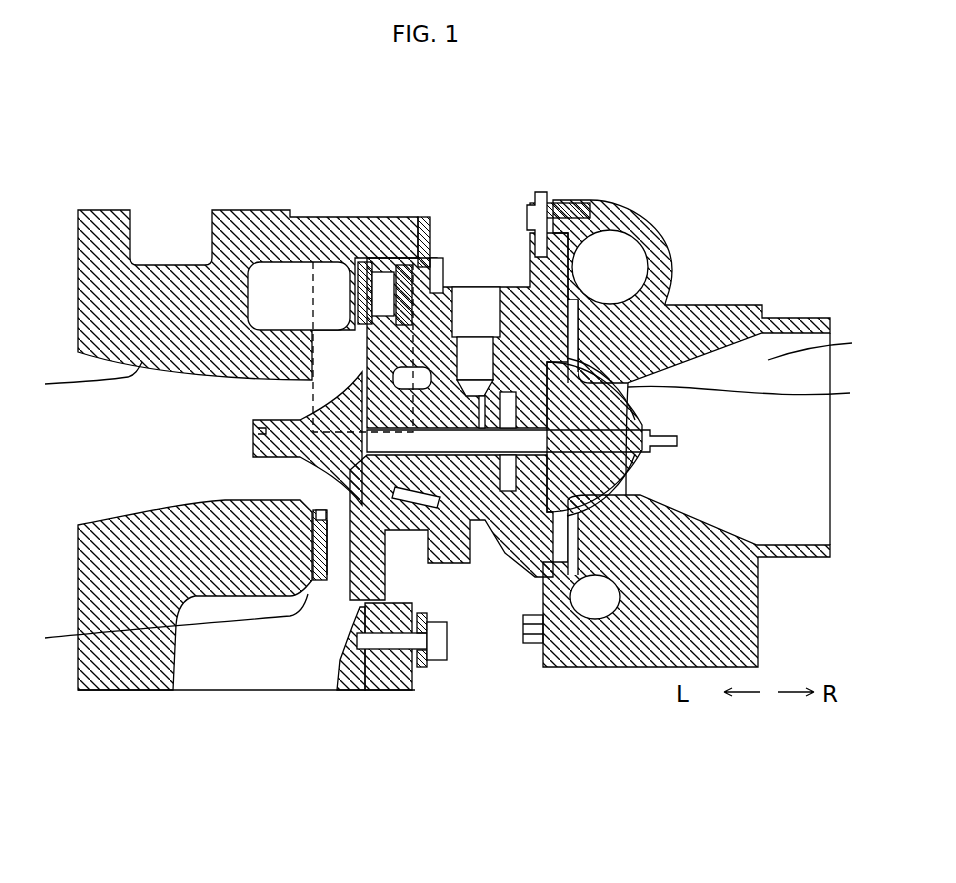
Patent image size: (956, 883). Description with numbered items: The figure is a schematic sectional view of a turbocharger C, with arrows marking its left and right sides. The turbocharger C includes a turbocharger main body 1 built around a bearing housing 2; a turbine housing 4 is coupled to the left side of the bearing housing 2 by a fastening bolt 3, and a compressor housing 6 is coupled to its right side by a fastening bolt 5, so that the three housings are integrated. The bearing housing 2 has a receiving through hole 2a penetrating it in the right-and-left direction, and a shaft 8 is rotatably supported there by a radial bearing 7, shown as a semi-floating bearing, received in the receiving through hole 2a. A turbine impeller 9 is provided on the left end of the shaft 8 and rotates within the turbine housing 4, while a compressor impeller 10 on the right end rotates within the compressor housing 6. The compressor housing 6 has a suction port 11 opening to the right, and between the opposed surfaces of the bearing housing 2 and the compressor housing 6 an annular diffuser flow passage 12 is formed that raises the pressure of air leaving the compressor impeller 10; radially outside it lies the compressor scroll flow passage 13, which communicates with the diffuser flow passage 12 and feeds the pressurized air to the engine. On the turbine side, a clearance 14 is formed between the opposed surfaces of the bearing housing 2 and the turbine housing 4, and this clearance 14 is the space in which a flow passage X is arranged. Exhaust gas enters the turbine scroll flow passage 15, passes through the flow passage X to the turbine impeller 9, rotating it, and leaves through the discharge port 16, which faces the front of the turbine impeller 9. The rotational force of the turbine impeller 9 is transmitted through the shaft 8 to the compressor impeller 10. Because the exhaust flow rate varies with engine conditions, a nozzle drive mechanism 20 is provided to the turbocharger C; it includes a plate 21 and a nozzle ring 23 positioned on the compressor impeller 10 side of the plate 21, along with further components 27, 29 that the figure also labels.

The turbocharger main body 1 is at (126, 164).
The turbocharger C is at (86, 132).
The bearing housing 2 is at (512, 287).
The receiving through hole 2a is at (438, 262).
The fastening bolt 3 is at (435, 662).
The turbine housing 4 is at (216, 210).
The fastening bolt 5 is at (536, 194).
The compressor housing 6 is at (782, 318).
The radial bearing 7 is at (440, 502).
The shaft 8 is at (482, 430).
The turbine impeller 9 is at (265, 487).
The compressor impeller 10 is at (754, 393).
The suction port 11 is at (824, 345).
The diffuser flow passage 12 is at (590, 330).
The compressor scroll flow passage 13 is at (603, 282).
The clearance 14 is at (163, 625).
The turbine scroll flow passage 15 is at (286, 310).
The discharge port 16 is at (80, 380).
The nozzle drive mechanism 20 is at (332, 285).
The plate 21 is at (316, 588).
The nozzle ring 23 is at (353, 612).
The seal member 27 is at (366, 270).
The back plate 29 is at (405, 270).
The flow passage X is at (348, 580).